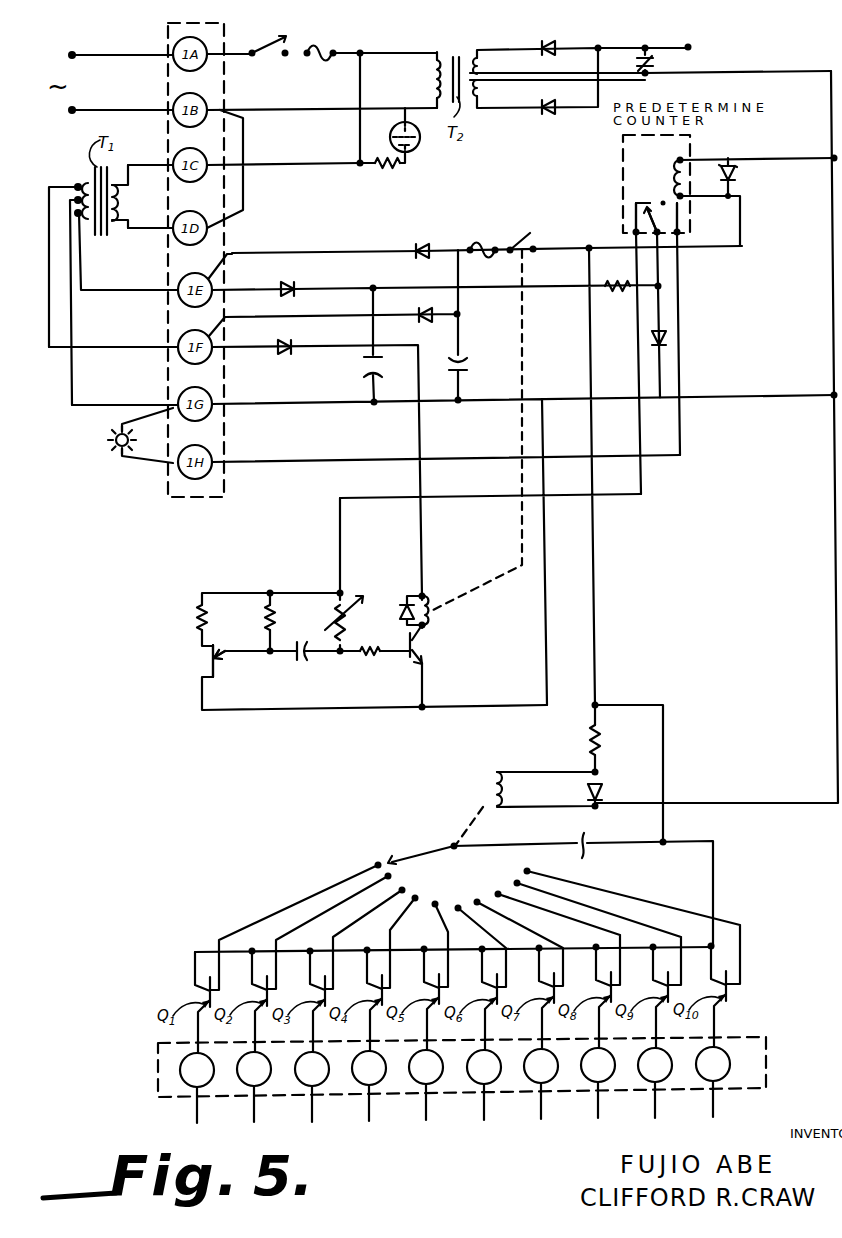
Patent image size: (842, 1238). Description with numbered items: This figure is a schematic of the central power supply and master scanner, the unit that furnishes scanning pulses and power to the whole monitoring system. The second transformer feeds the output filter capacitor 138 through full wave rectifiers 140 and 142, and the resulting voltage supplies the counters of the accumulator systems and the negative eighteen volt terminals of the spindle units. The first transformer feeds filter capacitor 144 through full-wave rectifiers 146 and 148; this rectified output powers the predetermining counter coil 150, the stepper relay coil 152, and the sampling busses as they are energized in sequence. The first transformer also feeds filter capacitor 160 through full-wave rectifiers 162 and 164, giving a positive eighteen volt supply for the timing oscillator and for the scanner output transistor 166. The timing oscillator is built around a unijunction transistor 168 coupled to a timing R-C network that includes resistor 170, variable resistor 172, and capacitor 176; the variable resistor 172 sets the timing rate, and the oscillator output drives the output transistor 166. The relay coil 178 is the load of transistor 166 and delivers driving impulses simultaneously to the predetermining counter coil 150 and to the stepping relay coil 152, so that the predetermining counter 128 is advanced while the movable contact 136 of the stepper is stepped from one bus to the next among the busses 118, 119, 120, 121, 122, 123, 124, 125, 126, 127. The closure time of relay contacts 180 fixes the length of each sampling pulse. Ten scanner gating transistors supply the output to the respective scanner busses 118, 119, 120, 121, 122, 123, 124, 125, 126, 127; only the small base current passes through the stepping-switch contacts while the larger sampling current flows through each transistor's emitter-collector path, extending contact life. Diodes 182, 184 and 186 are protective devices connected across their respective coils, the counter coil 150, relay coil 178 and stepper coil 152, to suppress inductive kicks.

The bus 118 is at (195, 1117).
The bus 119 is at (252, 1116).
The bus 120 is at (310, 1116).
The bus 121 is at (367, 1115).
The bus 122 is at (424, 1114).
The bus 123 is at (482, 1114).
The bus 124 is at (539, 1113).
The bus 125 is at (596, 1112).
The bus 126 is at (653, 1112).
The bus 127 is at (711, 1111).
The predetermining counter 128 is at (690, 143).
The movable contact 136 is at (432, 840).
The output filter capacitor 138 is at (657, 72).
The full wave rectifier 140 is at (560, 44).
The full wave rectifier 142 is at (548, 116).
The filter capacitor 144 is at (464, 356).
The full-wave rectifier 146 is at (428, 243).
The full-wave rectifier 148 is at (428, 324).
The predetermining counter coil 150 is at (665, 205).
The stepper relay coil 152 is at (527, 745).
The filter capacitor 160 is at (368, 364).
The full-wave rectifier 162 is at (298, 285).
The full-wave rectifier 164 is at (295, 341).
The scanner output transistor 166 is at (405, 666).
The unijunction transistor 168 is at (208, 665).
The resistor 170 is at (270, 618).
The variable resistor 172 is at (343, 595).
The capacitor 176 is at (298, 661).
The relay coil 178 is at (432, 612).
The relay contacts 180 is at (520, 244).
The diode 182 is at (736, 178).
The diode 184 is at (405, 598).
The diode 186 is at (602, 748).